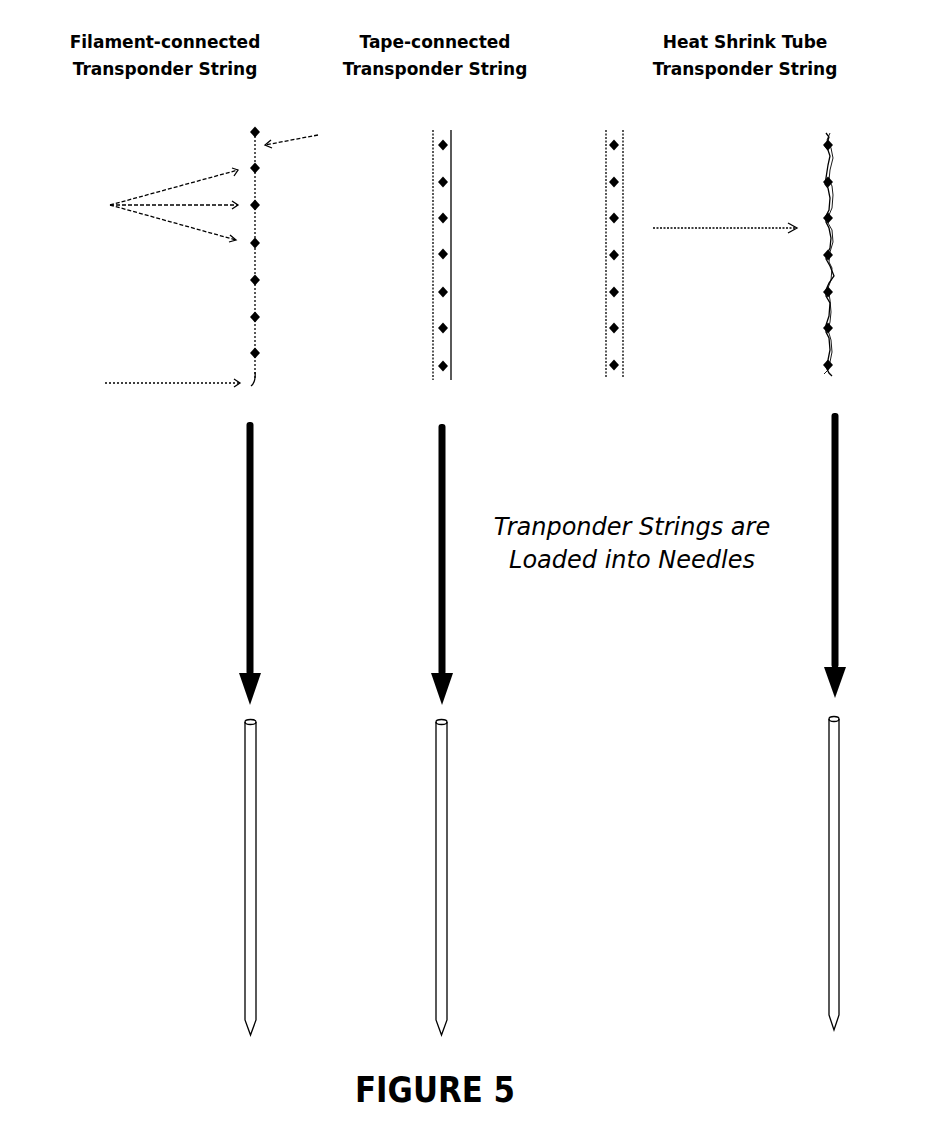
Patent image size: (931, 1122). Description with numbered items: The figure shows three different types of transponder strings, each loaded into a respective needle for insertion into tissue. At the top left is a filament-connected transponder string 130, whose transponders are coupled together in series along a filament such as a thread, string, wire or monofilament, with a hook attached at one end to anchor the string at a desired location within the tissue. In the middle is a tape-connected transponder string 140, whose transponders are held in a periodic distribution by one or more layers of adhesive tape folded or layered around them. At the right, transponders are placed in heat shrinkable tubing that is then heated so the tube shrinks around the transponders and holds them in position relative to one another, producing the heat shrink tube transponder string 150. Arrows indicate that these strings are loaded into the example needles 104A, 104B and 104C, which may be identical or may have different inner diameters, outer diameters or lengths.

The filament-connected transponder string 130 is at (181, 254).
The tape-connected transponder string 140 is at (424, 242).
The heat shrink tube transponder string 150 is at (715, 234).
The needle 104A is at (202, 878).
The needle 104B is at (493, 878).
The needle 104C is at (787, 874).